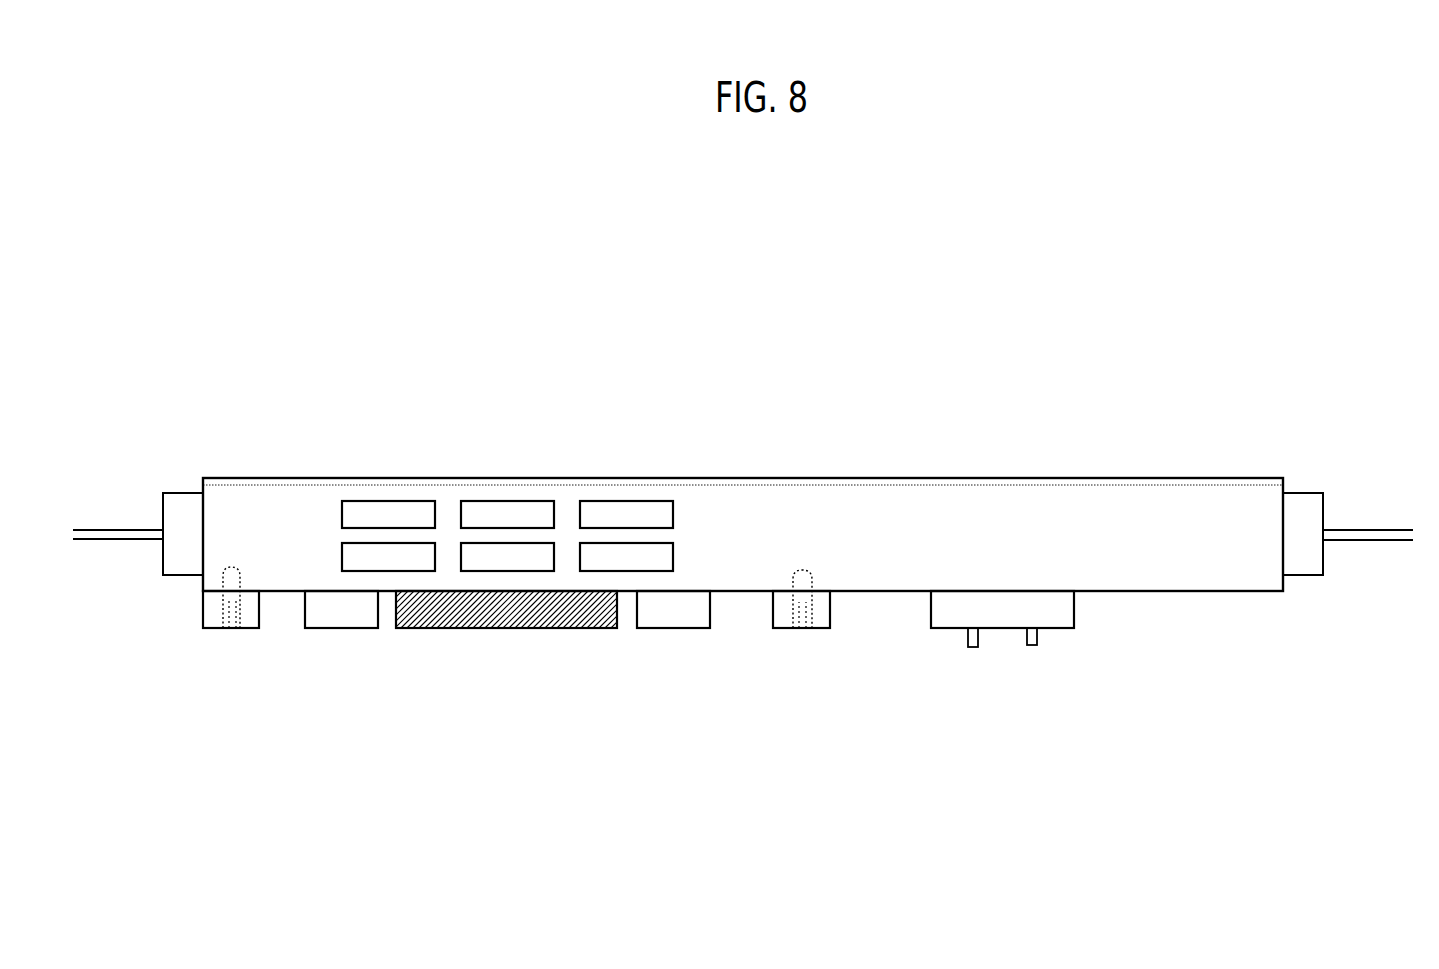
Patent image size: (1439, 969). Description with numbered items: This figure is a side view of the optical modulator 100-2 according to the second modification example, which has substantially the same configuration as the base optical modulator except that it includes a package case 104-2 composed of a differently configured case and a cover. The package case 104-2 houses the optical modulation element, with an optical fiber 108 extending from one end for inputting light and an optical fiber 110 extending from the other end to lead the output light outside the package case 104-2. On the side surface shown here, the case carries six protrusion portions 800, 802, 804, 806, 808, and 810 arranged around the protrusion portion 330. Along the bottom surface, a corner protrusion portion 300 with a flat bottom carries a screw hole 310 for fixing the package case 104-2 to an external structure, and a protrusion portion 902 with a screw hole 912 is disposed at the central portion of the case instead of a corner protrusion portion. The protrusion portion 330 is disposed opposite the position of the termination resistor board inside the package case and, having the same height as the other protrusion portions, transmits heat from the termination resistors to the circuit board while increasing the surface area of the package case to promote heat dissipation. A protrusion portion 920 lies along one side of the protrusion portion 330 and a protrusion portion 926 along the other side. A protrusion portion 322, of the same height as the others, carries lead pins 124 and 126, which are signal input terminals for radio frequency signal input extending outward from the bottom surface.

The optical modulator 100-2 is at (333, 334).
The package case 104-2 is at (707, 488).
The optical fiber 110 is at (120, 535).
The optical fiber 108 is at (1370, 538).
The protrusion portion 800 is at (368, 513).
The protrusion portion 802 is at (488, 513).
The protrusion portion 804 is at (608, 513).
The protrusion portion 806 is at (395, 557).
The protrusion portion 808 is at (517, 557).
The protrusion portion 810 is at (638, 557).
The protrusion portion 300 is at (213, 602).
The screw hole 310 is at (228, 643).
The protrusion portion 920 is at (343, 612).
The protrusion portion 330 is at (515, 612).
The protrusion portion 926 is at (672, 612).
The protrusion portion 902 is at (826, 618).
The screw hole 912 is at (792, 634).
The protrusion portion 322 is at (1058, 612).
The lead pin 124 is at (973, 647).
The lead pin 126 is at (1033, 646).